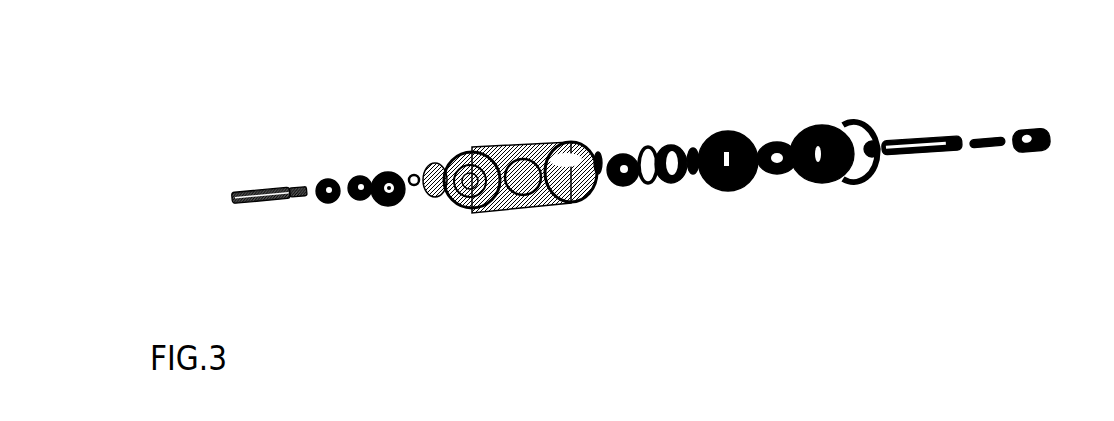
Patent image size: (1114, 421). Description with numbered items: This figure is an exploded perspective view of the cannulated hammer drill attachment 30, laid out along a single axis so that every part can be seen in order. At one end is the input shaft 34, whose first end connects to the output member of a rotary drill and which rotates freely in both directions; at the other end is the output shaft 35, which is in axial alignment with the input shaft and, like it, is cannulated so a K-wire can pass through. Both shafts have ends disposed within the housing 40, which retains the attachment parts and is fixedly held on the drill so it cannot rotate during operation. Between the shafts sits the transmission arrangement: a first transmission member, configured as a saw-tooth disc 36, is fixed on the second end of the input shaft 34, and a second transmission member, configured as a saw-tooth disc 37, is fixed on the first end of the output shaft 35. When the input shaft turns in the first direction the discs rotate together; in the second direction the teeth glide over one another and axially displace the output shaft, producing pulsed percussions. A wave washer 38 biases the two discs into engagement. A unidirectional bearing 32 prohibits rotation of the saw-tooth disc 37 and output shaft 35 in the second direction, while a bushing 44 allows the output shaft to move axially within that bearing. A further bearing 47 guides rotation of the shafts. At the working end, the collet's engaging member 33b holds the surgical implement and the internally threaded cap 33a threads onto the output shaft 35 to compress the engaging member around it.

The attachment 30 is at (302, 103).
The unidirectional bearing 32 is at (735, 132).
The internally threaded cap 33a is at (1038, 130).
The engaging member 33b is at (982, 150).
The input shaft 34 is at (248, 204).
The output shaft 35 is at (895, 143).
The first transmission member 36 is at (392, 207).
The second transmission member 37 is at (630, 156).
The wave washer 38 is at (647, 184).
The housing 40 is at (468, 148).
The bushing 44 is at (780, 142).
The bearing 47 is at (830, 127).